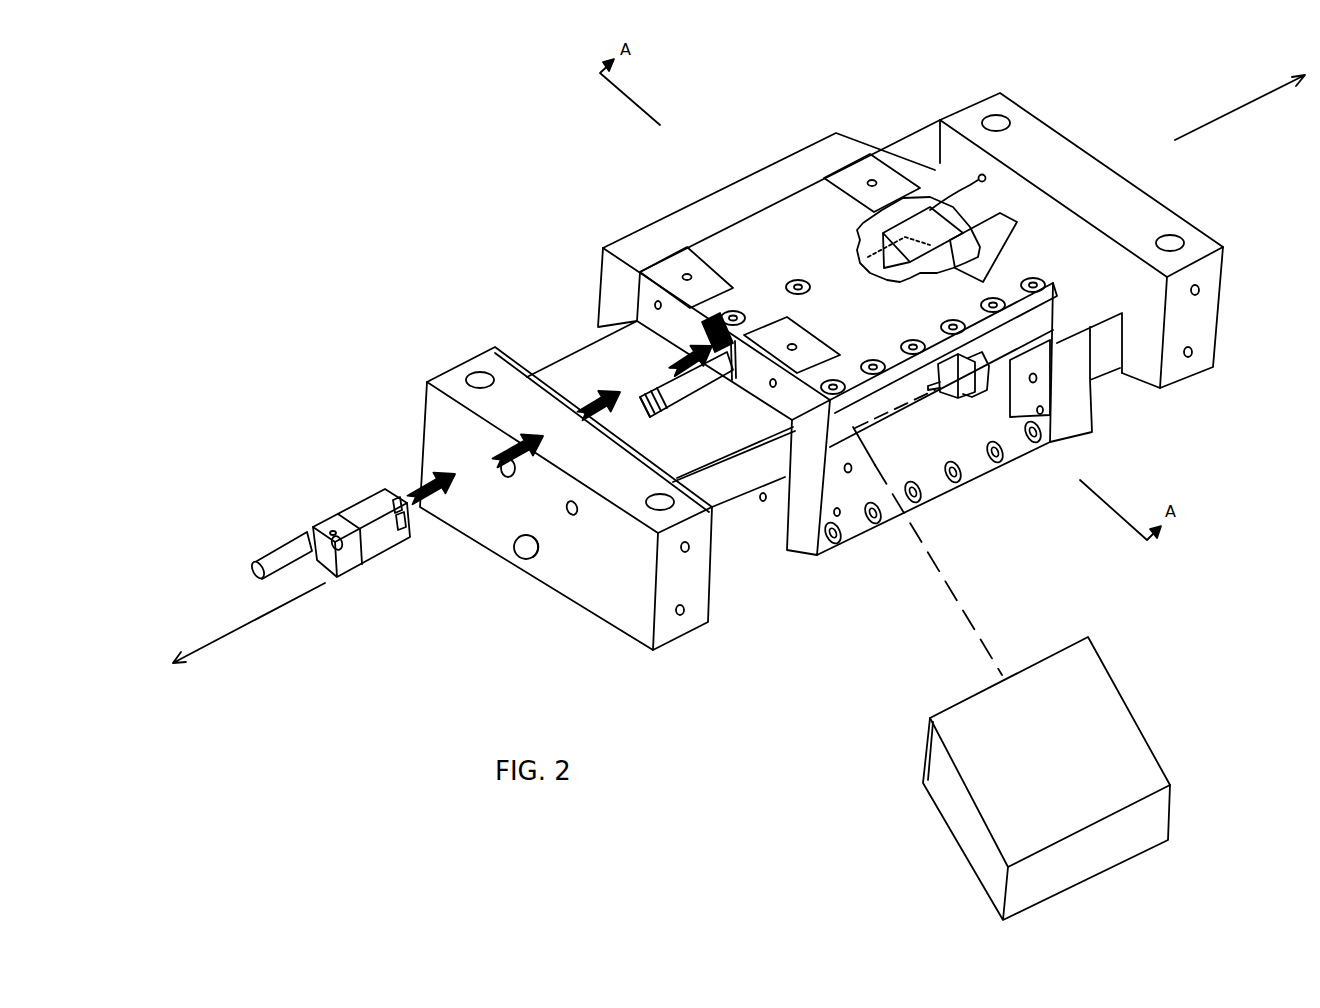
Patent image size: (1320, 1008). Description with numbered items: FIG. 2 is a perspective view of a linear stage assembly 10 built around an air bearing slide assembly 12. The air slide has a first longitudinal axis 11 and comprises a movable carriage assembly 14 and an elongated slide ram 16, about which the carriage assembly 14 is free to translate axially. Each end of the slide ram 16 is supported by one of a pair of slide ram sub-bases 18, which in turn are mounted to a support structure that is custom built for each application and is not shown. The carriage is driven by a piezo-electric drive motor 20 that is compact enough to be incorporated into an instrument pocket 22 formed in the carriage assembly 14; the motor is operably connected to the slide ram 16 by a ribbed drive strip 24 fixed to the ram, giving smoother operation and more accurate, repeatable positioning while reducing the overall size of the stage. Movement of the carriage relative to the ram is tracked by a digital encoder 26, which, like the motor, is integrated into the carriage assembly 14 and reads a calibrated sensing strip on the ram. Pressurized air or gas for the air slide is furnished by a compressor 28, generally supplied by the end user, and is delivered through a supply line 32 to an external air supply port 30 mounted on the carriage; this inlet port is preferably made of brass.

The linear stage assembly 10 is at (498, 173).
The first longitudinal axis 11 is at (201, 633).
The air bearing slide assembly 12 is at (638, 190).
The carriage assembly 14 is at (773, 153).
The slide ram 16 is at (552, 353).
The slide ram sub-bases 18 is at (618, 648).
The piezo-electric drive motor 20 is at (335, 503).
The instrument pocket 22 is at (698, 347).
The ribbed drive strip 24 is at (672, 394).
The digital encoder 26 is at (921, 220).
The compressor 28 is at (1140, 708).
The external air supply port 30 is at (942, 392).
The supply line 32 is at (952, 571).